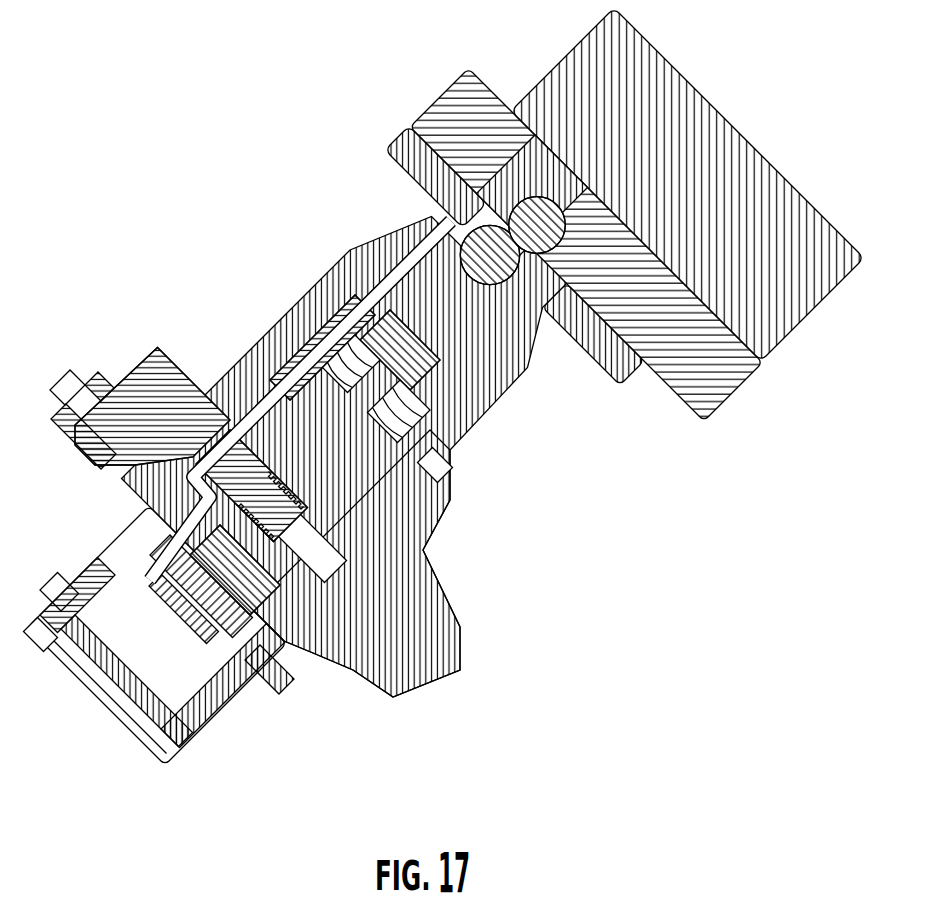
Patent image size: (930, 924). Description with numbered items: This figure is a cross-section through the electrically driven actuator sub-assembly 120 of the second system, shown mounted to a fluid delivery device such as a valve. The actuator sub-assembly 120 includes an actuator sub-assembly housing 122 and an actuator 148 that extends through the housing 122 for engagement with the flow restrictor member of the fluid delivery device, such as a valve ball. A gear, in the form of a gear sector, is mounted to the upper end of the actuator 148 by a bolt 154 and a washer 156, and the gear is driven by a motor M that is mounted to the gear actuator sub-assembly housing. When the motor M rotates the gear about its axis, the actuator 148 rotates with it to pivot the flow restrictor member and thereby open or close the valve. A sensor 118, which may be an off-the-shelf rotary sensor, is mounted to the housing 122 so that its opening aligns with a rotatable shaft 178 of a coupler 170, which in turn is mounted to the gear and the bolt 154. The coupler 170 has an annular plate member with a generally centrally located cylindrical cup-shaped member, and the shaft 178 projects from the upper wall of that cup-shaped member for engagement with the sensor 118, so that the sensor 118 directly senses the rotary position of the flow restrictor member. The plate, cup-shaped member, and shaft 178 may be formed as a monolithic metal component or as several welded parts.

The motor M is at (765, 395).
The actuator sub-assembly 120 is at (258, 280).
The actuator 148 is at (364, 698).
The sensor 118 is at (146, 333).
The coupler 170 is at (151, 497).
The actuator sub-assembly housing 122 is at (180, 764).
The bolt 154 is at (248, 447).
The rotatable shaft 178 is at (187, 415).
The washer 156 is at (437, 505).